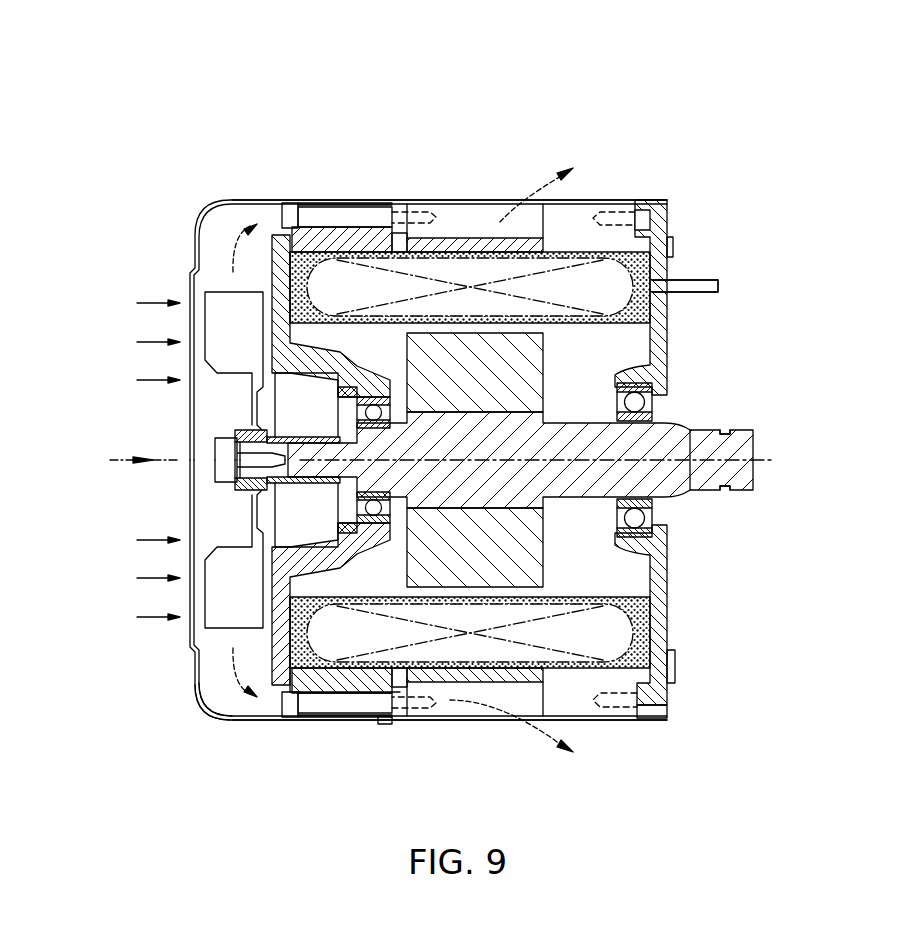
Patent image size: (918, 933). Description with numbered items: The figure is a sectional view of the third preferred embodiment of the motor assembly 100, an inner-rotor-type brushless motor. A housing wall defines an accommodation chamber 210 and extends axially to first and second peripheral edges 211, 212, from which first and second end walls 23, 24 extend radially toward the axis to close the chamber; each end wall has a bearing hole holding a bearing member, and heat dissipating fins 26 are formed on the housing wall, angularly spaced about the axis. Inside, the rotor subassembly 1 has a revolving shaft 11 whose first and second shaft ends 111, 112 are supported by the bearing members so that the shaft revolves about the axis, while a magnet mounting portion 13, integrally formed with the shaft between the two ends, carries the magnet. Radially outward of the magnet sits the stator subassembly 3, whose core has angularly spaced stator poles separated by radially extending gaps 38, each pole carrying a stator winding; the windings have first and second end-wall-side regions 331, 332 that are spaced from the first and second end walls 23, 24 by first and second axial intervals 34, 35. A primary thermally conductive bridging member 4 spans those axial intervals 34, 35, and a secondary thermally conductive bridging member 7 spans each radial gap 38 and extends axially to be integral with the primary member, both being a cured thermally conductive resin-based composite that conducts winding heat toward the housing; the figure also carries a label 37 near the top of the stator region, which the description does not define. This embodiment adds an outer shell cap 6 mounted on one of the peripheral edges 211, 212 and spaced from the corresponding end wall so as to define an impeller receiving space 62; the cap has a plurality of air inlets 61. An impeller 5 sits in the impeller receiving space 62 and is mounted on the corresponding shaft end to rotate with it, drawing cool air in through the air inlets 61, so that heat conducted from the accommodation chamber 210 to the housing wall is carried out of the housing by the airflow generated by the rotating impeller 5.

The motor assembly 100 is at (277, 72).
The rotor subassembly 1 is at (730, 433).
The revolving shaft 11 is at (690, 428).
The first shaft end 111 is at (645, 480).
The second shaft end 112 is at (343, 488).
The magnet mounting portion 13 is at (447, 497).
The first end wall 23 is at (658, 232).
The second end wall 24 is at (282, 281).
The heat dissipating fins 26 is at (433, 200).
The stator subassembly 3 is at (675, 246).
The first end-wall-side region 331 is at (633, 273).
The second end-wall-side region 332 is at (312, 252).
The first axial interval 34 is at (685, 286).
The primary thermally conductive bridging member 4 is at (643, 307).
The second axial interval 35 is at (303, 302).
The cover plate 37 is at (472, 210).
The radially extending gaps 38 is at (470, 460).
The secondary thermally conductive bridging member 7 is at (575, 247).
The impeller 5 is at (213, 712).
The outer shell cap 6 is at (258, 198).
The air inlets 61 is at (185, 453).
The impeller receiving space 62 is at (260, 710).
The accommodation chamber 210 is at (328, 692).
The first peripheral edge 211 is at (657, 722).
The second peripheral edge 212 is at (387, 727).